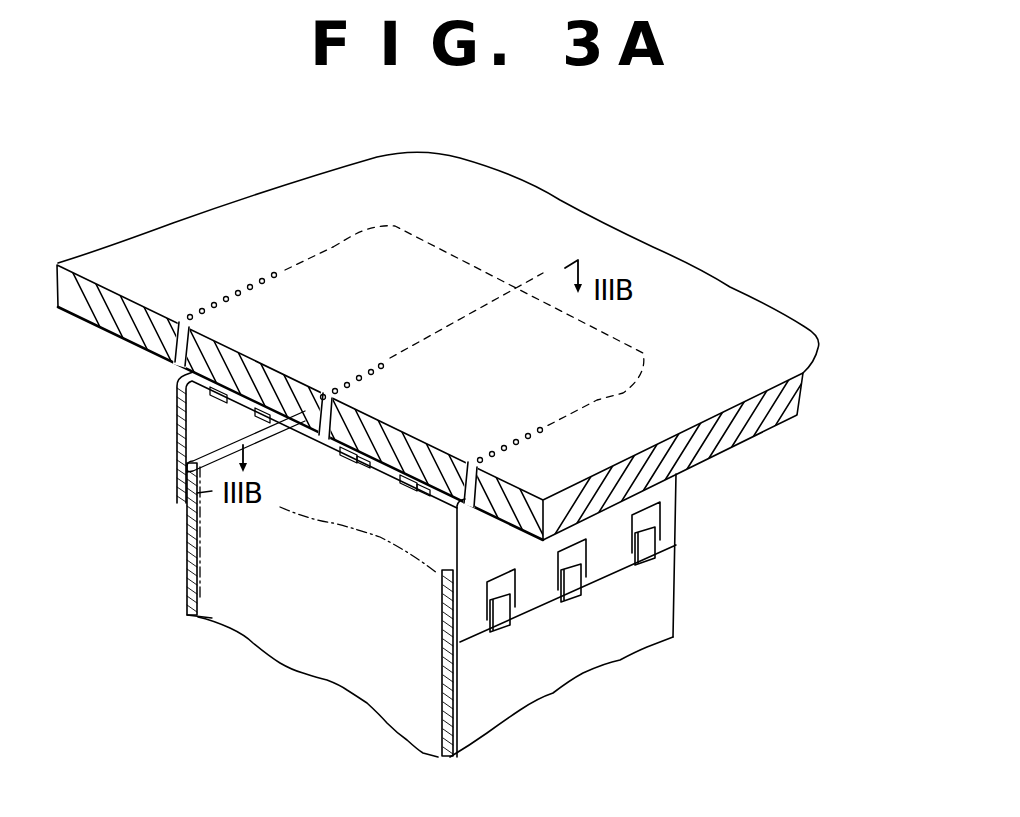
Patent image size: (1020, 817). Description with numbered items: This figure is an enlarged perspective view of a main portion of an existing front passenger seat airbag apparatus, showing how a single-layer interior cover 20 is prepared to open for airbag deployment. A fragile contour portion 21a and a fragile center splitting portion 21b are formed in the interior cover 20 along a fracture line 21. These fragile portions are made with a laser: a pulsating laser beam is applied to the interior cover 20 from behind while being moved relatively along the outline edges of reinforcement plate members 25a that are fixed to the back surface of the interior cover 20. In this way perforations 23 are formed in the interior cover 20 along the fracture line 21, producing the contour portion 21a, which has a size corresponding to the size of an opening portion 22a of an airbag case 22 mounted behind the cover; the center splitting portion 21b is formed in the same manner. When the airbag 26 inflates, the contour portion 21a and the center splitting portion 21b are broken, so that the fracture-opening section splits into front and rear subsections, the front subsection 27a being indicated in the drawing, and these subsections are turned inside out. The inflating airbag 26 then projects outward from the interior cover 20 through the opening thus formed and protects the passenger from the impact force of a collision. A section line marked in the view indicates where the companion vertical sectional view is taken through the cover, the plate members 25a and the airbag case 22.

The interior cover 20 is at (533, 204).
The fracture line 21 is at (283, 267).
The contour portion 21a is at (228, 293).
The center splitting portion 21b is at (380, 363).
The airbag case 22 is at (557, 657).
The opening portion 22a is at (203, 452).
The perforations 23 is at (177, 347).
The reinforcement plate members 25a is at (293, 433).
The airbag 26 is at (213, 542).
The front subsection 27a is at (347, 262).